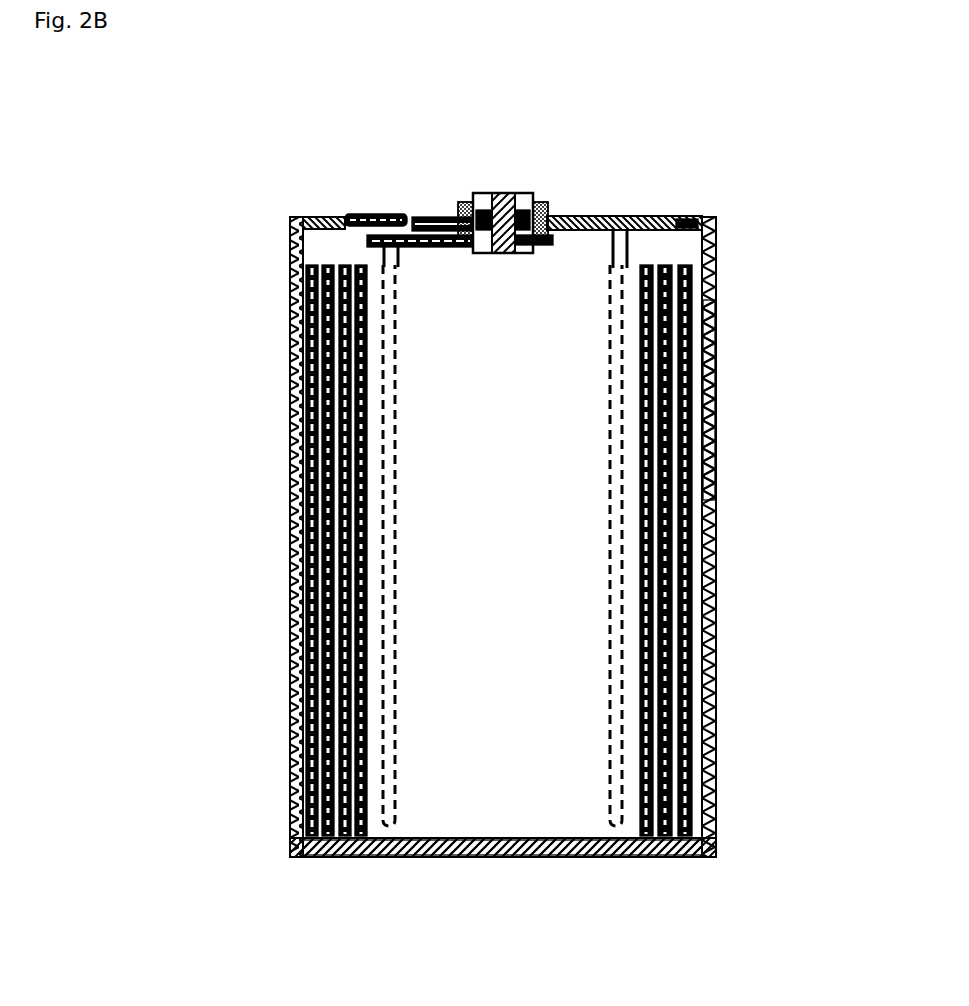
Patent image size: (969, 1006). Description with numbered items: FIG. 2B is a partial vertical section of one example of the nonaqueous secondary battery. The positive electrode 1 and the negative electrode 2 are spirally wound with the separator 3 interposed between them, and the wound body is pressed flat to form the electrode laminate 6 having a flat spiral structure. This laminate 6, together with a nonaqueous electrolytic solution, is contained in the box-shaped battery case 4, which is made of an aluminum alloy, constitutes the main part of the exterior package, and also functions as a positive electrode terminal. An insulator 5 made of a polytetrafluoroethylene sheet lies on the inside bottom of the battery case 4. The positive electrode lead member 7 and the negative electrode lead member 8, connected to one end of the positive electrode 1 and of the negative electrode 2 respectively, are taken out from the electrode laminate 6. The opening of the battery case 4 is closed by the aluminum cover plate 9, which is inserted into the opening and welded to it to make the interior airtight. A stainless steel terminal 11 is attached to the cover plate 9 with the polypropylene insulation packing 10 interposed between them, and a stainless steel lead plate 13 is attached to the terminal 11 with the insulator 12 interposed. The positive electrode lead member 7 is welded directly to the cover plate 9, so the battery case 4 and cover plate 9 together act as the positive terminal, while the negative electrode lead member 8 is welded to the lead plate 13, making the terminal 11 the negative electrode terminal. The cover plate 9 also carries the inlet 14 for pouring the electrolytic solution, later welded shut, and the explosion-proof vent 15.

The positive electrode 1 is at (290, 467).
The negative electrode 2 is at (320, 612).
The separator 3 is at (320, 535).
The battery case 4 is at (703, 425).
The insulator 5 is at (452, 855).
The electrode laminate 6 is at (433, 407).
The positive electrode lead member 7 is at (630, 250).
The negative electrode lead member 8 is at (382, 262).
The cover plate 9 is at (630, 216).
The insulation packing 10 is at (545, 205).
The terminal 11 is at (510, 218).
The insulator 12 is at (462, 215).
The lead plate 13 is at (408, 218).
The inlet 14 is at (688, 215).
The explosion-proof vent 15 is at (352, 215).